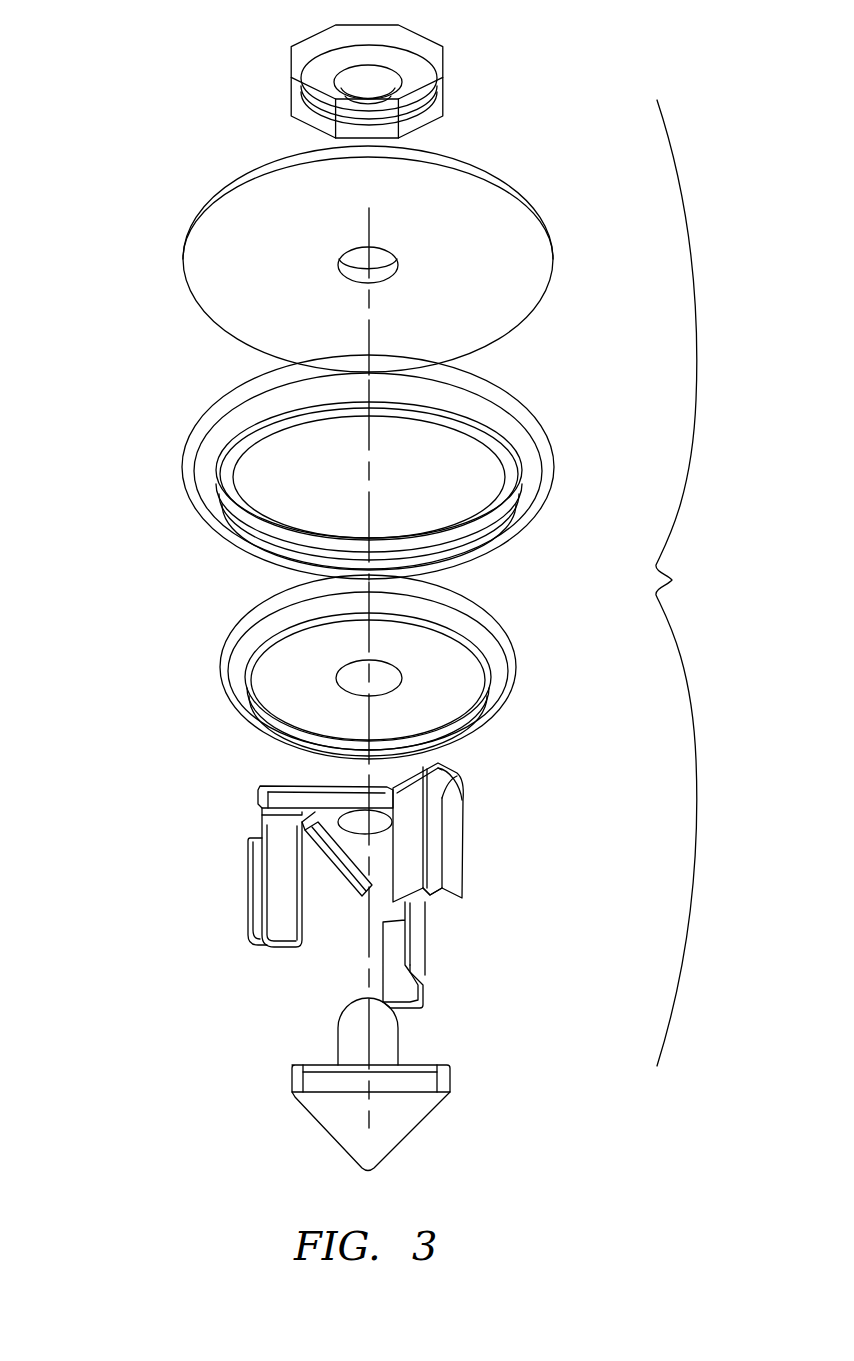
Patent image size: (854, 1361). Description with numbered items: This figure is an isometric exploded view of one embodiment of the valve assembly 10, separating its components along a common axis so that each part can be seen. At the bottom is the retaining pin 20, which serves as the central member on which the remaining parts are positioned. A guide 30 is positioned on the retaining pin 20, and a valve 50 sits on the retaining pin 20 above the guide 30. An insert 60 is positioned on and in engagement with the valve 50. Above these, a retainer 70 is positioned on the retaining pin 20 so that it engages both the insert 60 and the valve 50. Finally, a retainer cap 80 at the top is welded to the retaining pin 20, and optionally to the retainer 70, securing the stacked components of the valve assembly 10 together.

The valve assembly 10 is at (688, 583).
The retaining pin 20 is at (288, 1076).
The guide 30 is at (240, 872).
The valve 50 is at (218, 672).
The insert 60 is at (186, 465).
The retainer 70 is at (186, 258).
The retainer cap 80 is at (284, 66).